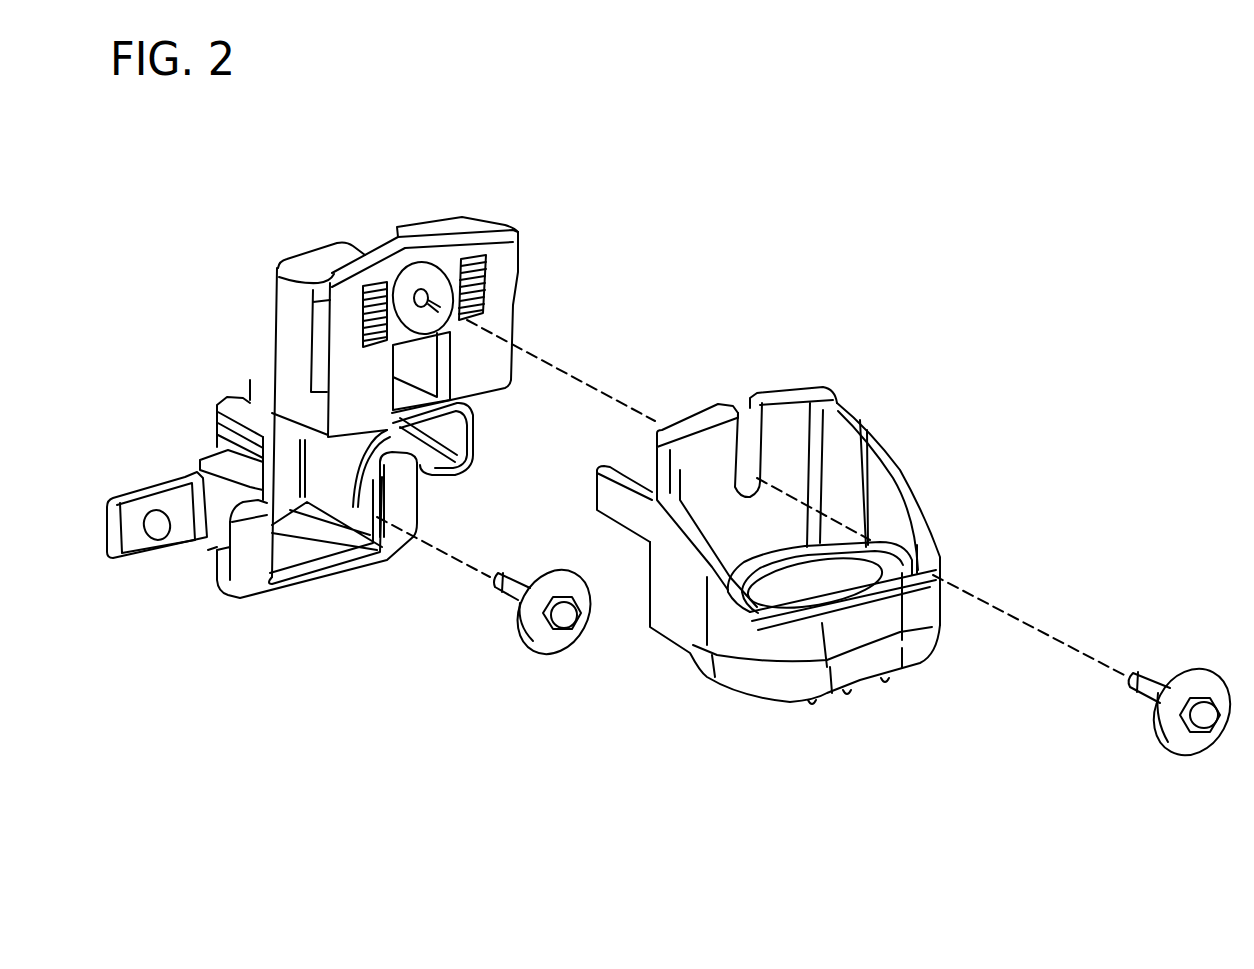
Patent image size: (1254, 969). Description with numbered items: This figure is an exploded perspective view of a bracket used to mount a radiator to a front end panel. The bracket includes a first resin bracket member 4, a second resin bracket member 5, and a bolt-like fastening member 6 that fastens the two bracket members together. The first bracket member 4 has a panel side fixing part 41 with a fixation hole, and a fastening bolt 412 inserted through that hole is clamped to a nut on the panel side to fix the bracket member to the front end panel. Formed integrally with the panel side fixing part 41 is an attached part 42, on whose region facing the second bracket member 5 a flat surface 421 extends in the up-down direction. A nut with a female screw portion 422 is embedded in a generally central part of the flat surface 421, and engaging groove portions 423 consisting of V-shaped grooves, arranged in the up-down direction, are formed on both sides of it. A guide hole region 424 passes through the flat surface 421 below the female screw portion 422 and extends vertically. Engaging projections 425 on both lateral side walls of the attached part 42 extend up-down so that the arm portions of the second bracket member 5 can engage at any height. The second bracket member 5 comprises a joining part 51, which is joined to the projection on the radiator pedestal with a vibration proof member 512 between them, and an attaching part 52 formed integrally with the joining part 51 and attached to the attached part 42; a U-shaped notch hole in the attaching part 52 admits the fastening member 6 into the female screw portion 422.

The first resin bracket member 4 is at (196, 272).
The panel side fixing part 41 is at (254, 613).
The fastening bolt 412 is at (540, 647).
The attached part 42 is at (467, 198).
The flat surface 421 is at (505, 248).
The female screw portion 422 is at (415, 292).
The engaging groove portions 423 is at (364, 285).
The guide hole region 424 is at (427, 367).
The engaging projections 425 is at (313, 357).
The second resin bracket member 5 is at (879, 408).
The joining part 51 is at (659, 651).
The vibration proof member 512 is at (848, 693).
The attaching part 52 is at (782, 377).
The fastening member 6 is at (1193, 670).